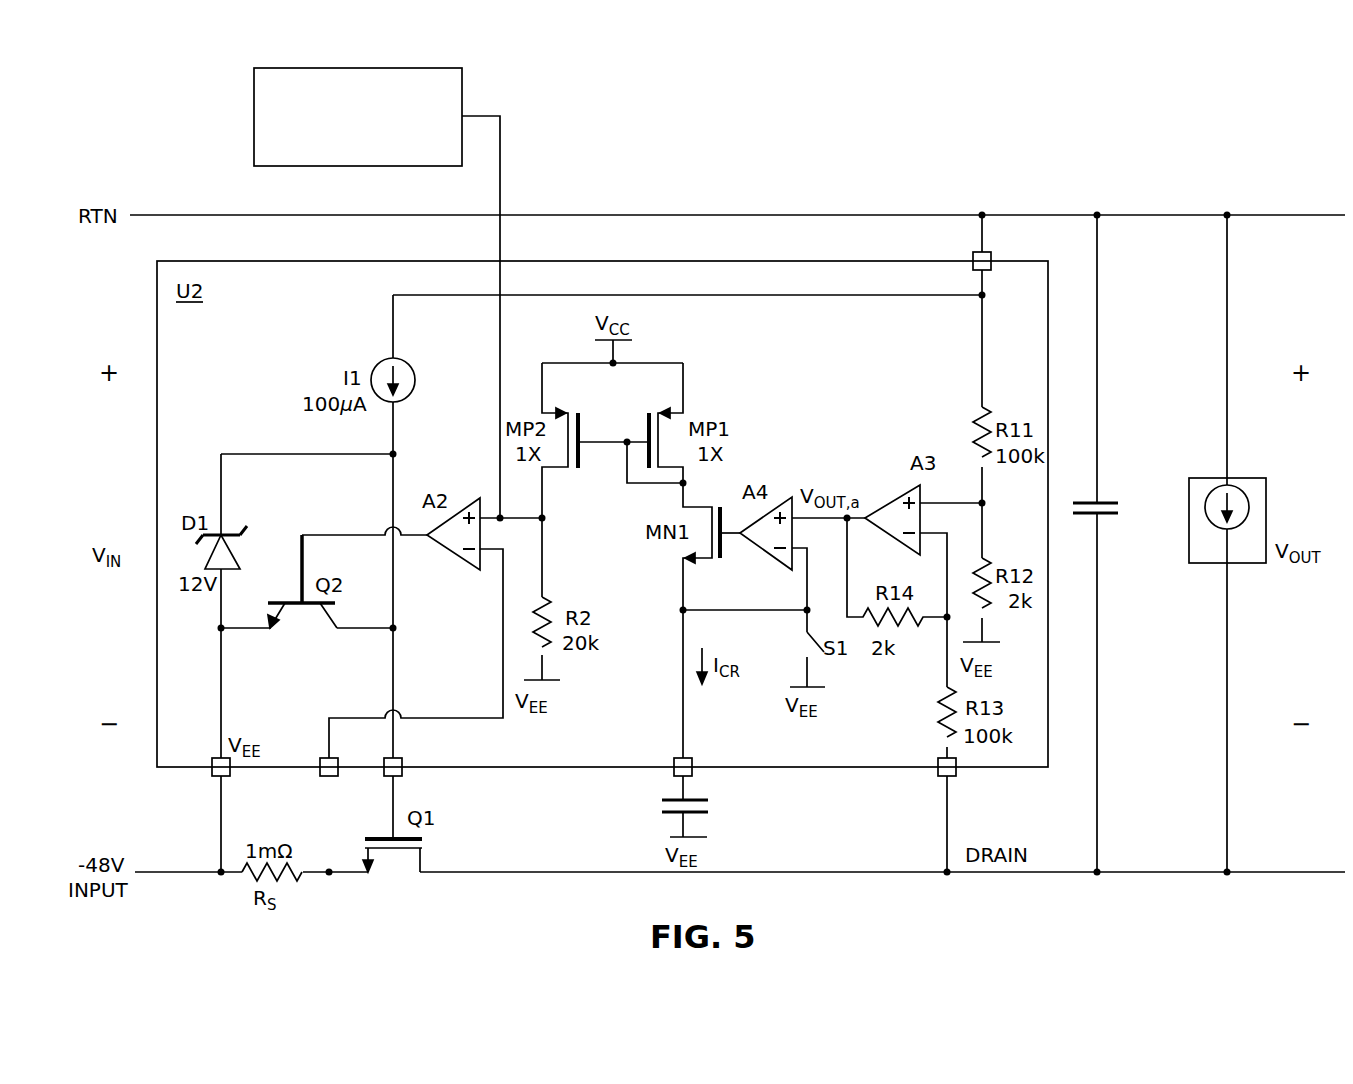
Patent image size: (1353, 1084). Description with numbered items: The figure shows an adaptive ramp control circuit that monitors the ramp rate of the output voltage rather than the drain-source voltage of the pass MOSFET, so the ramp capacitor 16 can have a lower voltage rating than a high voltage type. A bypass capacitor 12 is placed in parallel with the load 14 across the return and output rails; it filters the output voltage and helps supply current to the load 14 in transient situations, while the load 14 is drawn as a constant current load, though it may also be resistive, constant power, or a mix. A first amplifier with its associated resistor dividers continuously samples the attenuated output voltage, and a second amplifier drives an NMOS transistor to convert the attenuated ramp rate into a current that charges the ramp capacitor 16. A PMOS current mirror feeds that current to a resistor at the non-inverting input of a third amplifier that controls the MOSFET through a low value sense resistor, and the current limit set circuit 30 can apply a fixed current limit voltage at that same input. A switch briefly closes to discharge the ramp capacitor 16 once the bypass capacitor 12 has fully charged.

The current limit set circuit 30 is at (254, 115).
The bypass capacitor 12 is at (1083, 500).
The load 14 is at (1205, 478).
The ramp capacitor 16 is at (672, 814).